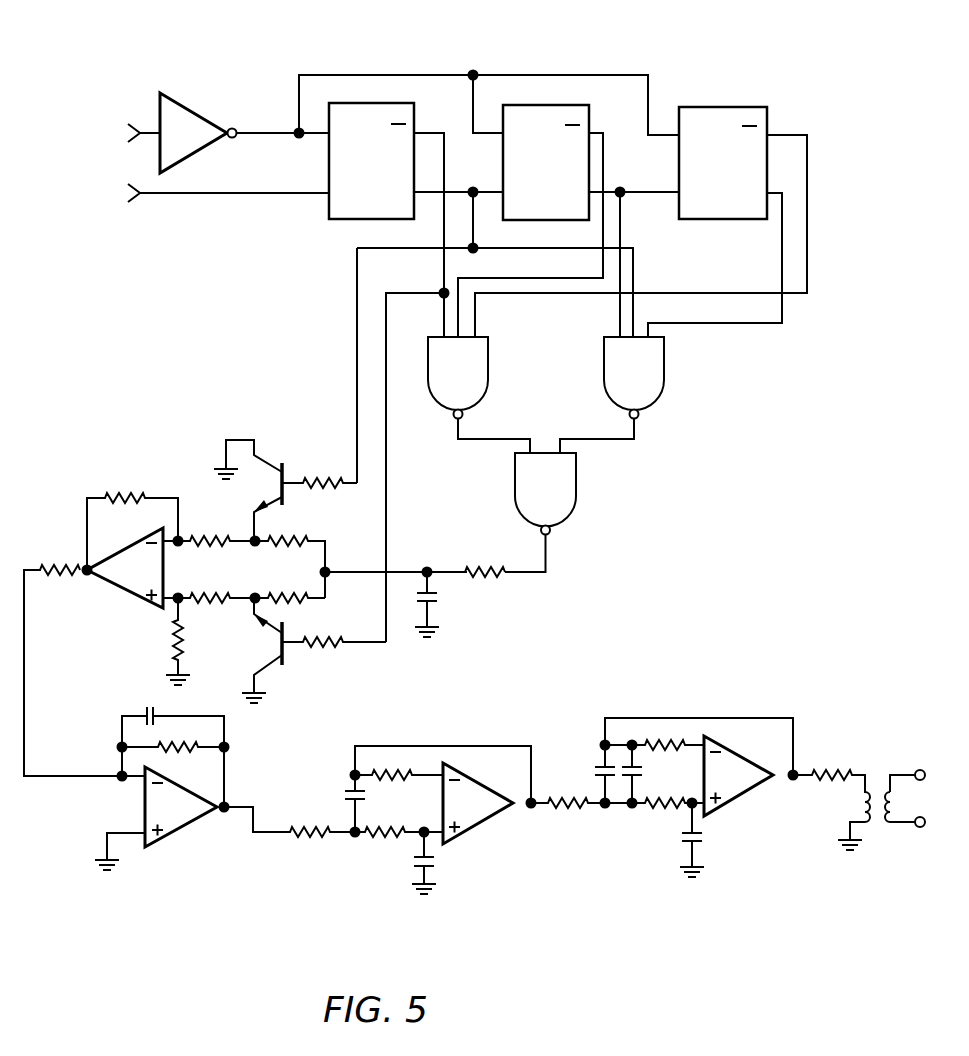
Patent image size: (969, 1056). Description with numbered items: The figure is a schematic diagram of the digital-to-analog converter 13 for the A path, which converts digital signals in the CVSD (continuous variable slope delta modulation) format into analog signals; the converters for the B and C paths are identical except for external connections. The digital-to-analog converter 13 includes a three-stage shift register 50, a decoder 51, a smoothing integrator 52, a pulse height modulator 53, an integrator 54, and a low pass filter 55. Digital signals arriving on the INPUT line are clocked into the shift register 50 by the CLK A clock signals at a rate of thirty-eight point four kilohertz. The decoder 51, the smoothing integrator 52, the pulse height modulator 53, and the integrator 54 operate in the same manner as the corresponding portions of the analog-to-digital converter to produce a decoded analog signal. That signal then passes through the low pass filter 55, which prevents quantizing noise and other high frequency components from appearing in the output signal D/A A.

The digital-to-analog converter 13 is at (752, 573).
The three-stage shift register 50 is at (738, 60).
The decoder 51 is at (662, 440).
The smoothing integrator 52 is at (429, 553).
The pulse height modulator 53 is at (143, 617).
The integrator 54 is at (103, 743).
The low pass filter 55 is at (582, 707).